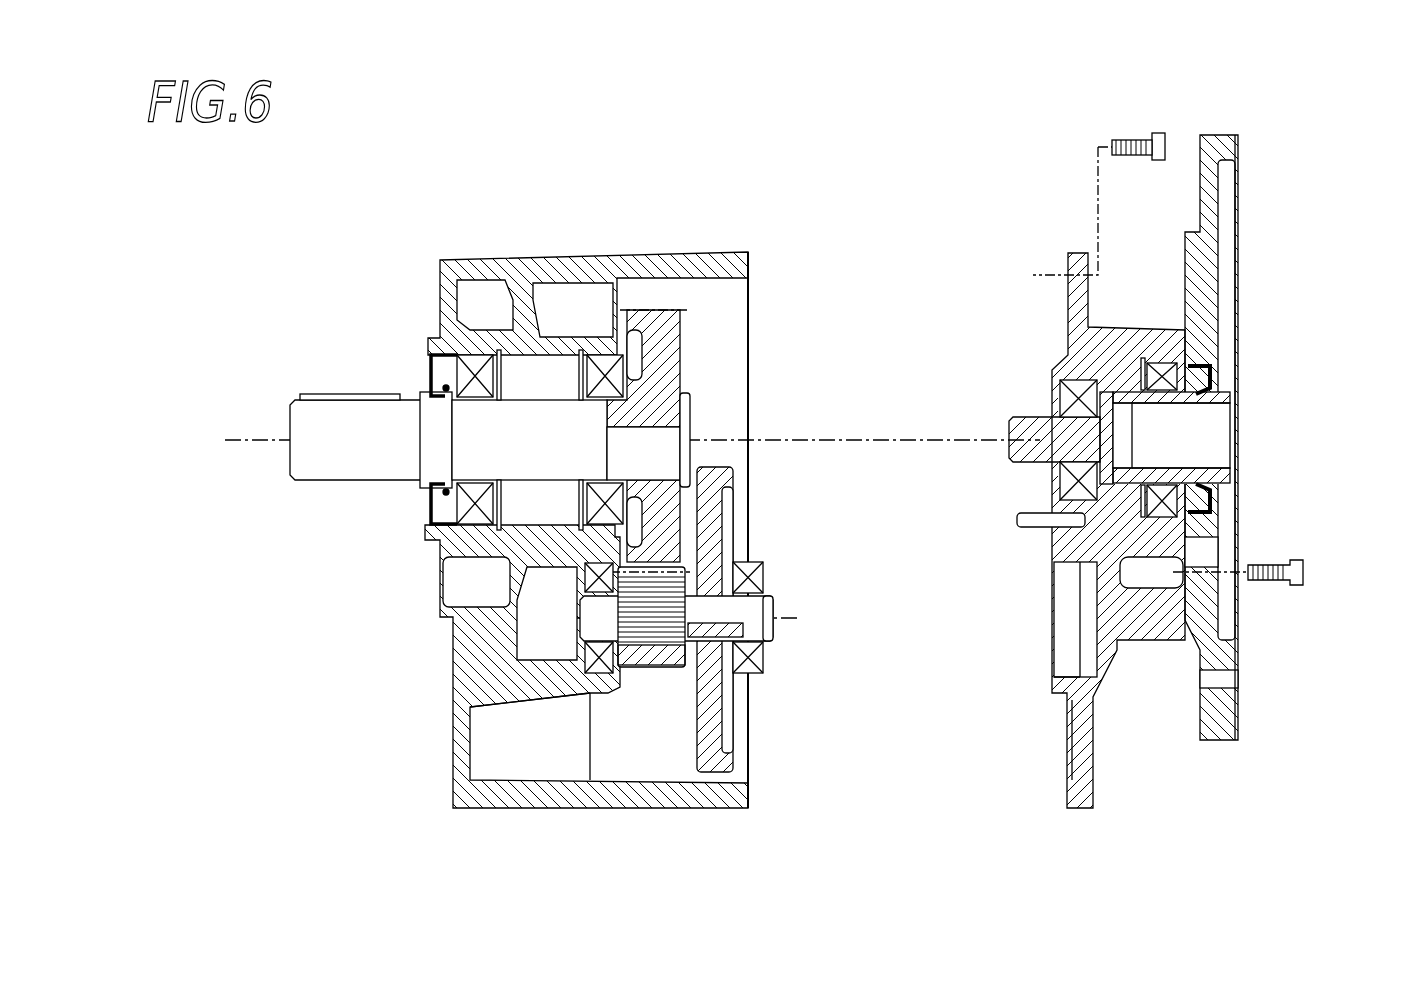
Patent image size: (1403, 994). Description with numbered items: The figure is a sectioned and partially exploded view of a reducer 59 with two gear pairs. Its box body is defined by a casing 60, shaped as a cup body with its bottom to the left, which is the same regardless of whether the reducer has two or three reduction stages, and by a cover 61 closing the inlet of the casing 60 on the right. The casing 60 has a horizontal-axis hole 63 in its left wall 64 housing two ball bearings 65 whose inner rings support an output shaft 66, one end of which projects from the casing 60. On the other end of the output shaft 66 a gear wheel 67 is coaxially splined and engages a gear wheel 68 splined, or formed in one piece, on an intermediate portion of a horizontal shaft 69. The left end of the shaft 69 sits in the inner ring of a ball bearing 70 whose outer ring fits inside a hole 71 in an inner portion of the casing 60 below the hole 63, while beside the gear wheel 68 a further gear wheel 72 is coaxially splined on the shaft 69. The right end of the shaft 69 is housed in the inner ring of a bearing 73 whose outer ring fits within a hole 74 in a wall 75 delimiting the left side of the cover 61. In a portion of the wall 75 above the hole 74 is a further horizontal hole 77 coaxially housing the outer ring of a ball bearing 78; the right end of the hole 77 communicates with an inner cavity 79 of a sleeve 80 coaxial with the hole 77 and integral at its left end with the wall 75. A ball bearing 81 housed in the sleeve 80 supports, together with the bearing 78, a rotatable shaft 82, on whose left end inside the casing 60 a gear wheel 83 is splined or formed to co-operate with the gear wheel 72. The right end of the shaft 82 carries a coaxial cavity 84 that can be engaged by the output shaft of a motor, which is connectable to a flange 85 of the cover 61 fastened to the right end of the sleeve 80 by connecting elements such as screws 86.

The reducer 59 is at (501, 450).
The casing 60 is at (508, 258).
The cover 61 is at (1162, 503).
The hole 63 is at (428, 500).
The wall 64 is at (450, 648).
The ball bearings 65 is at (474, 360).
The output shaft 66 is at (315, 415).
The gear wheel 67 is at (665, 340).
The gear wheel 68 is at (657, 663).
The shaft 69 is at (752, 603).
The ball bearing 70 is at (592, 578).
The hole 71 is at (583, 657).
The gear wheel 72 is at (722, 750).
The bearing 73 is at (745, 562).
The hole 74 is at (1068, 675).
The wall 75 is at (1080, 785).
The hole 77 is at (1047, 392).
The ball bearing 78 is at (1063, 483).
The inner cavity 79 is at (1055, 555).
The sleeve 80 is at (1153, 342).
The ball bearing 81 is at (1175, 365).
The shaft 82 is at (1225, 400).
The gear wheel 83 is at (1023, 420).
The cavity 84 is at (1208, 468).
The flange 85 is at (1227, 145).
The screws 86 is at (1283, 595).